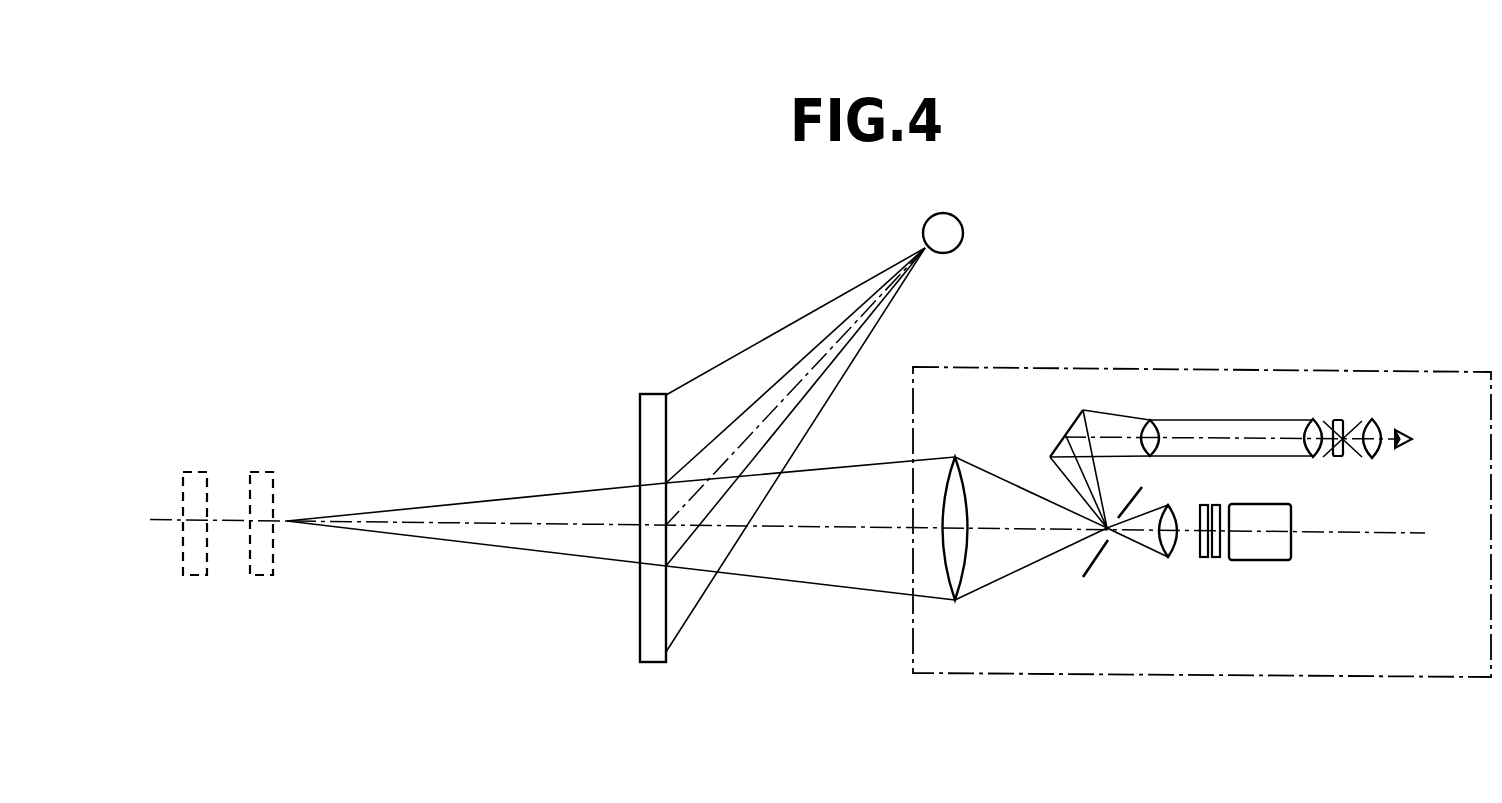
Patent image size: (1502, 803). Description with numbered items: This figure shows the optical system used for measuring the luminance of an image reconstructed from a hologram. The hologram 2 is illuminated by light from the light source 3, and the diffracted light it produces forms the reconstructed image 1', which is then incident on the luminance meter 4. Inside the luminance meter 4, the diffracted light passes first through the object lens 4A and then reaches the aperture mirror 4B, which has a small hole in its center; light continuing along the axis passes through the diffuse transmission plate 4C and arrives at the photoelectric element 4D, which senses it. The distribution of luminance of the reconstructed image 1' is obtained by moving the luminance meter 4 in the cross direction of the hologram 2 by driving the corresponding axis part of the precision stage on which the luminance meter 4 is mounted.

The reconstructed image 1' is at (228, 610).
The hologram 2 is at (648, 393).
The light source 3 is at (960, 253).
The luminance meter 4 is at (1027, 675).
The object lens 4A is at (965, 583).
The aperture mirror 4B is at (1100, 560).
The diffuse transmission plate 4C is at (1213, 560).
The photoelectric element 4D is at (1272, 560).